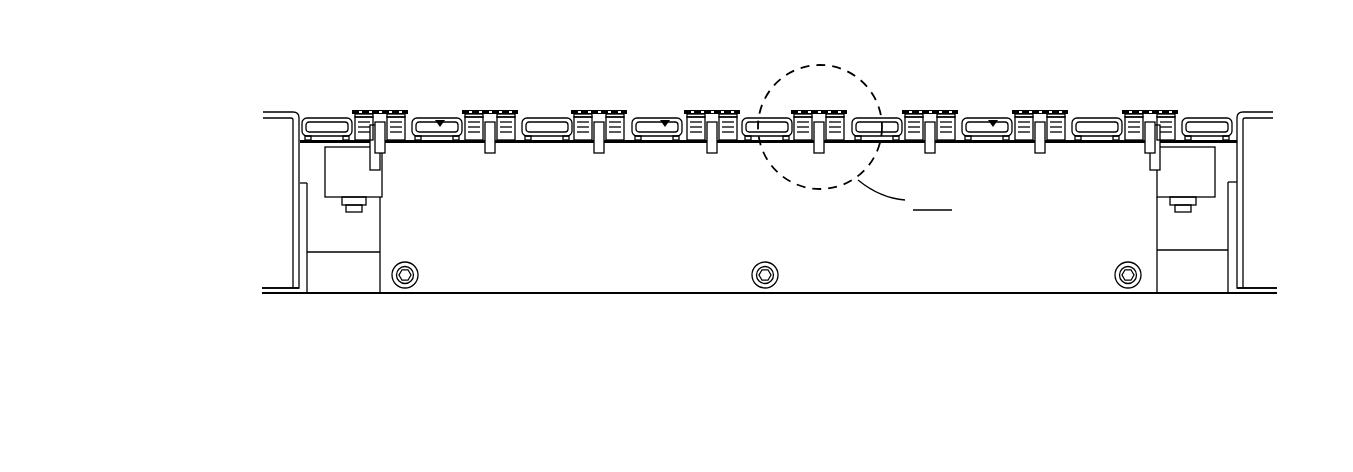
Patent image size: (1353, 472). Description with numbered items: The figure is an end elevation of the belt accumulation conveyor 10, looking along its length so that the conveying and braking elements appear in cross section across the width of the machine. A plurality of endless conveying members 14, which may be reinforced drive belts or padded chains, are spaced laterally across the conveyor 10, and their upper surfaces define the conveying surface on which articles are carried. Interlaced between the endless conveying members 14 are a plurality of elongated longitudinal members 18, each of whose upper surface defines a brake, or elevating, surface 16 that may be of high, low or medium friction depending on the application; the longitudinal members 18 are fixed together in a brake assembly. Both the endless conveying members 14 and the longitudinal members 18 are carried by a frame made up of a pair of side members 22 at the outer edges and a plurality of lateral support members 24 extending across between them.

The belt accumulation conveyor 10 is at (256, 110).
The endless conveying member 14 is at (613, 112).
The brake surface 16 is at (439, 120).
The elongated longitudinal member 18 is at (441, 120).
The side member 22 is at (292, 178).
The lateral support member 24 is at (935, 295).